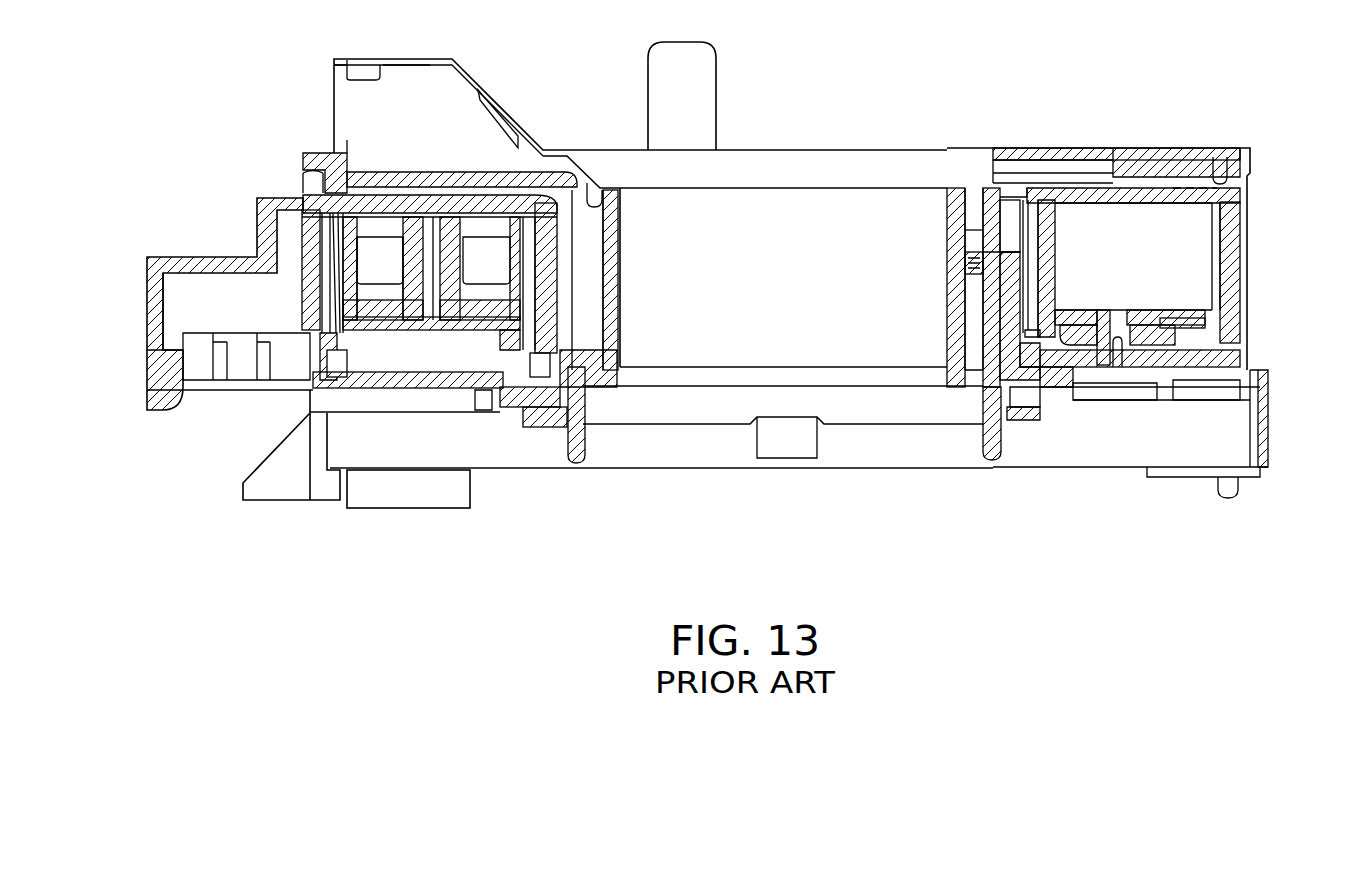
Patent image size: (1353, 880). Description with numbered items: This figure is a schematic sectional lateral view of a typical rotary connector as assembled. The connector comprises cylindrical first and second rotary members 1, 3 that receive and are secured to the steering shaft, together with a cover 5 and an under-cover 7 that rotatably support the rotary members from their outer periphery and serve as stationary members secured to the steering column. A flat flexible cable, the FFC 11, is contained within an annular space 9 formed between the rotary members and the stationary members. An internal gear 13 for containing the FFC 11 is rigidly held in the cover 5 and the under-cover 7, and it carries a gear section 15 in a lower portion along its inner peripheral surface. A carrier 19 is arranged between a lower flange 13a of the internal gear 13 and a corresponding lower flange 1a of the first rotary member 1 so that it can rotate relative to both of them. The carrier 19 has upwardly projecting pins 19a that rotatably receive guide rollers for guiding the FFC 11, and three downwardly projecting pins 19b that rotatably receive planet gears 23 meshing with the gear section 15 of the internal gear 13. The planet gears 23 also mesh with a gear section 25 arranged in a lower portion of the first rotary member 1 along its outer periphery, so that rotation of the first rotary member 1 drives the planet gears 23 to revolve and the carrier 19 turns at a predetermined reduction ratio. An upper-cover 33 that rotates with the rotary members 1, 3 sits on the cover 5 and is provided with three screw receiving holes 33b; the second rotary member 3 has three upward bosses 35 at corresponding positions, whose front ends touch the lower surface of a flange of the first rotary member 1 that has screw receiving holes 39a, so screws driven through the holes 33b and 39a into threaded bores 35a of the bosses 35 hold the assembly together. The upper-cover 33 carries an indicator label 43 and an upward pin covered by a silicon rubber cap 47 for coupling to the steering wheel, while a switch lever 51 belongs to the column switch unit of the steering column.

The first rotary member 1 is at (1056, 257).
The lower flange of the first rotary member 1a is at (1058, 310).
The second rotary member 3 is at (993, 445).
The cover 5 is at (1250, 162).
The under-cover 7 is at (1268, 468).
The annular space 9 is at (1150, 252).
The FFC 11 is at (1220, 215).
The internal gear 13 is at (1246, 270).
The lower flange of the internal gear 13a is at (1180, 318).
The gear section of the internal gear 15 is at (1238, 365).
The carrier 19 is at (1178, 300).
The upwardly projecting pins 19a is at (450, 228).
The downwardly projecting pins 19b is at (1098, 370).
The planet gears 23 is at (1176, 362).
The gear section of the first rotary member 25 is at (1030, 392).
The upper-cover 33 is at (1235, 150).
The screw receiving holes 33b is at (968, 197).
The bosses 35 is at (953, 323).
The threaded bores 35a is at (966, 265).
The screw receiving holes of the flange 39a is at (968, 240).
The indicator label 43 is at (1148, 148).
The cap 47 is at (697, 125).
The switch lever 51 is at (1023, 420).